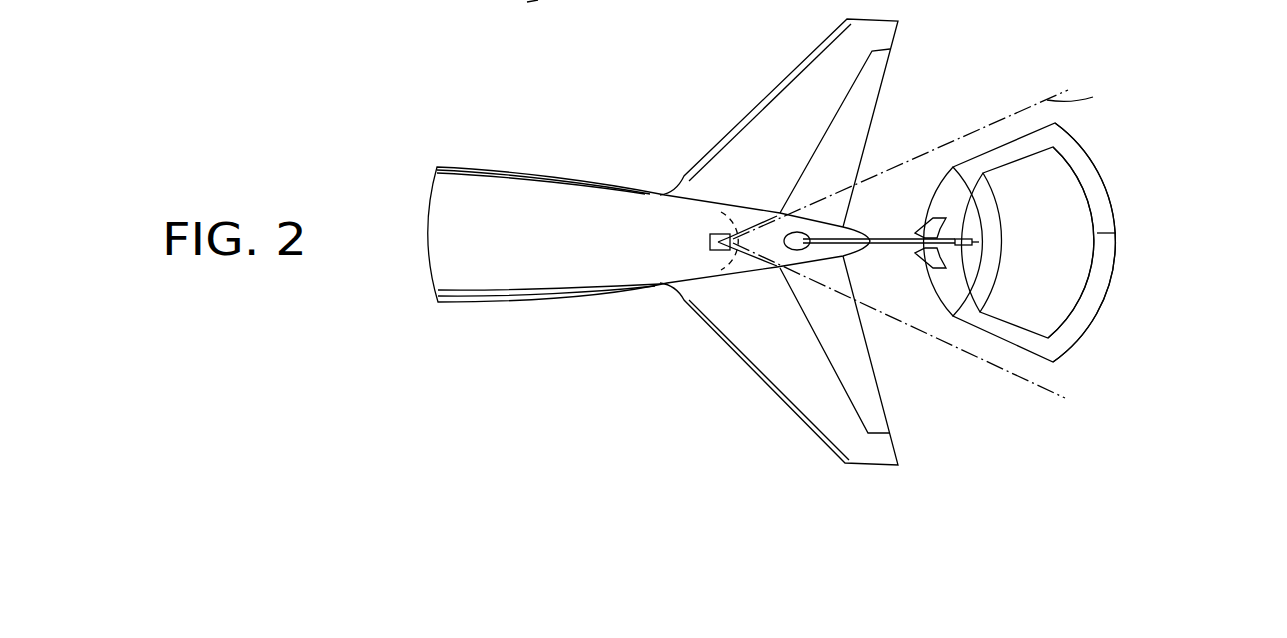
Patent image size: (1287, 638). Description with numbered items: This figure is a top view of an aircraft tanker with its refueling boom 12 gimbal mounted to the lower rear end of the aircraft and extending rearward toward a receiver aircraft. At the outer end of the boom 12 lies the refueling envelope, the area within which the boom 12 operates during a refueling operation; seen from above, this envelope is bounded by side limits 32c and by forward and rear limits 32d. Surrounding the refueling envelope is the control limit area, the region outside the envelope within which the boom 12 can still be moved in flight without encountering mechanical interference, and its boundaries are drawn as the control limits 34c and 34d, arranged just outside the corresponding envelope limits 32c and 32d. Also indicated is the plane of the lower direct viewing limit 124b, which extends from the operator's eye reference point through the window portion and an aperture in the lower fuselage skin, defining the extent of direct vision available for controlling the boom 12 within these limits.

The boom 12 is at (975, 124).
The side limits 32c is at (1012, 163).
The forward and rear limits 32d is at (990, 200).
The control limit 34c is at (1037, 128).
The control limit 34d is at (970, 292).
The lower direct viewing limit 124b is at (535, 0).